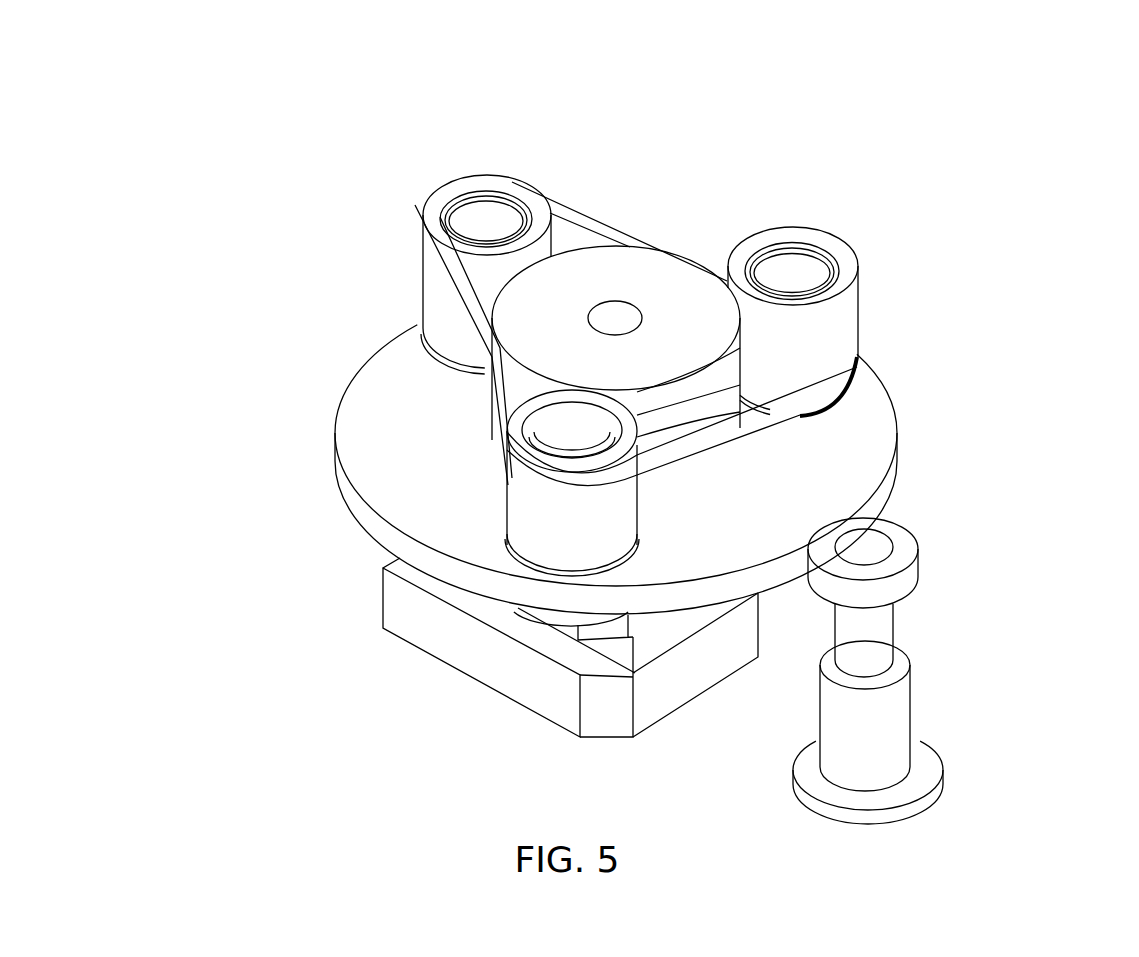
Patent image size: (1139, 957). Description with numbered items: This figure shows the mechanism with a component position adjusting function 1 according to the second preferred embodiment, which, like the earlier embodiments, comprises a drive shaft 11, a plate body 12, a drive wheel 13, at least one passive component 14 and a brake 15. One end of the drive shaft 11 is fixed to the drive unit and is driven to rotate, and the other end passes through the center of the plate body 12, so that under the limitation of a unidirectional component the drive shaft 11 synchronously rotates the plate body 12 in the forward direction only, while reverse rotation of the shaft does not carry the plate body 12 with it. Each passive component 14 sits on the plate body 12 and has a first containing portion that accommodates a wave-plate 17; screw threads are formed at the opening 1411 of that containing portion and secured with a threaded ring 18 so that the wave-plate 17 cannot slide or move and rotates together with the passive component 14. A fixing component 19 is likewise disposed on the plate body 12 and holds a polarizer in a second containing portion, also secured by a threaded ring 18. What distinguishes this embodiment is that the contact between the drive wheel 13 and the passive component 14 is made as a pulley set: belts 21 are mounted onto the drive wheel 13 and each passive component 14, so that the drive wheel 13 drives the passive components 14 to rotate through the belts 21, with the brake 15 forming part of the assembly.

The mechanism with a component position adjusting function 1 is at (352, 48).
The drive shaft 11 is at (612, 320).
The plate body 12 is at (822, 453).
The drive wheel 13 is at (645, 280).
The passive component 14 is at (497, 197).
The opening of the first containing portion 1411 is at (470, 197).
The brake 15 is at (897, 543).
The wave-plate 17 is at (807, 277).
The threaded ring 18 is at (437, 218).
The fixing component 19 is at (552, 617).
The belt 21 is at (588, 223).